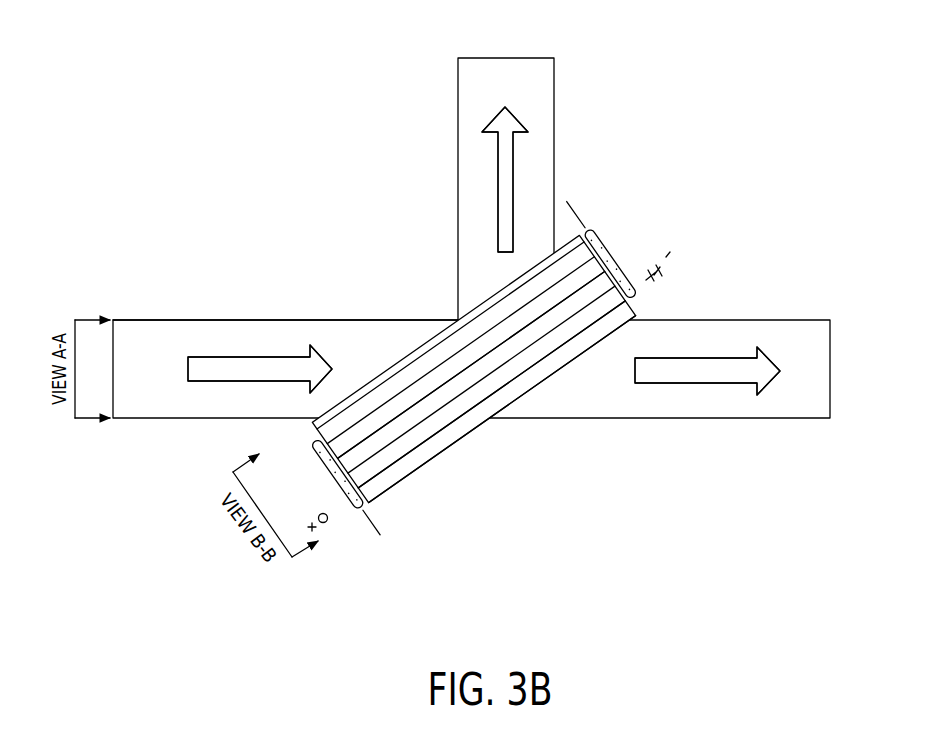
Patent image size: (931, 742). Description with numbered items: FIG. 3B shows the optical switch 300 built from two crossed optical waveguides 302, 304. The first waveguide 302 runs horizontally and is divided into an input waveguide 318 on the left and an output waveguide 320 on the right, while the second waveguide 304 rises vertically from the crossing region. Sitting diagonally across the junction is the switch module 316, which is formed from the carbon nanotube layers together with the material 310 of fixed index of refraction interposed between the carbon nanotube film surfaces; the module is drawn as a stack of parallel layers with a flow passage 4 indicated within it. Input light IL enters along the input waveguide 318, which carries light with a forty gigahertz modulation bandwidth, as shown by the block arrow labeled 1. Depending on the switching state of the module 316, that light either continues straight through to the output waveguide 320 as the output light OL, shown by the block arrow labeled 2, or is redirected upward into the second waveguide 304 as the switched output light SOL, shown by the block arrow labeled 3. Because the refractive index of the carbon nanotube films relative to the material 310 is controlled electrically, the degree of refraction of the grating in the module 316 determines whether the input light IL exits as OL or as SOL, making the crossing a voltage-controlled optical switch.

The optical switch 300 is at (577, 238).
The optical waveguide 302 is at (177, 320).
The optical waveguide 304 is at (555, 137).
The material 310 is at (443, 408).
The switch module 316 is at (413, 475).
The input waveguide 318 is at (325, 320).
The output waveguide 320 is at (781, 336).
The inlet flow arrow 1 is at (260, 369).
The outlet flow arrow 2 is at (707, 371).
The side outlet flow arrow 3 is at (505, 179).
The passage 4 is at (471, 355).
The input light IL is at (200, 382).
The output light OL is at (731, 384).
The switched output light SOL is at (497, 133).